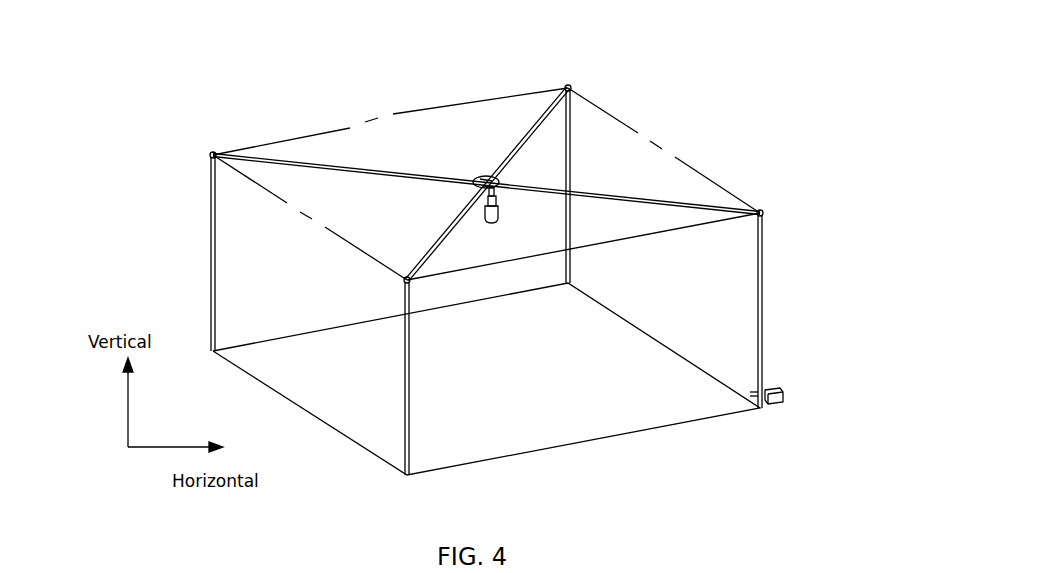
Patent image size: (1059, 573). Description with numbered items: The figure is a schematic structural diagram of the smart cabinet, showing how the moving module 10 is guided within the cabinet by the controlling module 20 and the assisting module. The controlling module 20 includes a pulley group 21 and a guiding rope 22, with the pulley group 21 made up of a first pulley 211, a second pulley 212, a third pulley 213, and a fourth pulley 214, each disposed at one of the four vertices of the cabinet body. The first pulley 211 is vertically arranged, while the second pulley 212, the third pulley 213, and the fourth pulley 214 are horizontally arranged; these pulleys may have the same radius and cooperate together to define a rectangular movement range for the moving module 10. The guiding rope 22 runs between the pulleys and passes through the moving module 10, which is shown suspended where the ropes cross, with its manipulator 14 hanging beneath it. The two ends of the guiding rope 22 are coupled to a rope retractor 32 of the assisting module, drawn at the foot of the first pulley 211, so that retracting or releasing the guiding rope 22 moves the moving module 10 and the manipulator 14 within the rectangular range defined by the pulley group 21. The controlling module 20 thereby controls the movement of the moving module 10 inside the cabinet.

The moving module 10 is at (468, 163).
The manipulator 14 is at (503, 230).
The controlling module 20 is at (650, 494).
The pulley group 21 is at (575, 80).
The guiding rope 22 is at (537, 133).
The rope retractor 32 is at (775, 390).
The first pulley 211 is at (760, 210).
The second pulley 212 is at (405, 277).
The third pulley 213 is at (210, 152).
The fourth pulley 214 is at (637, 133).